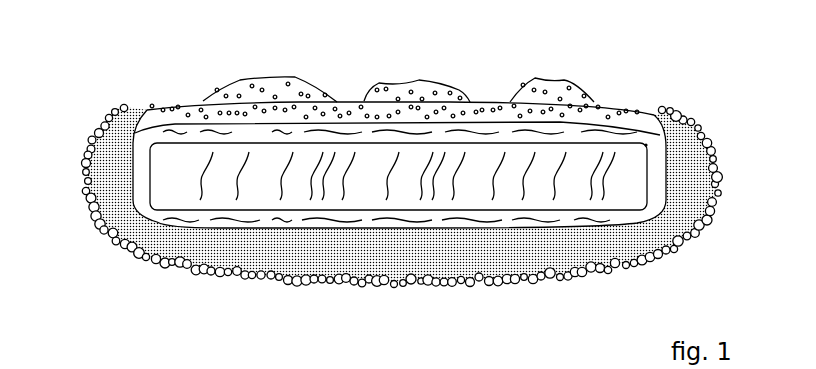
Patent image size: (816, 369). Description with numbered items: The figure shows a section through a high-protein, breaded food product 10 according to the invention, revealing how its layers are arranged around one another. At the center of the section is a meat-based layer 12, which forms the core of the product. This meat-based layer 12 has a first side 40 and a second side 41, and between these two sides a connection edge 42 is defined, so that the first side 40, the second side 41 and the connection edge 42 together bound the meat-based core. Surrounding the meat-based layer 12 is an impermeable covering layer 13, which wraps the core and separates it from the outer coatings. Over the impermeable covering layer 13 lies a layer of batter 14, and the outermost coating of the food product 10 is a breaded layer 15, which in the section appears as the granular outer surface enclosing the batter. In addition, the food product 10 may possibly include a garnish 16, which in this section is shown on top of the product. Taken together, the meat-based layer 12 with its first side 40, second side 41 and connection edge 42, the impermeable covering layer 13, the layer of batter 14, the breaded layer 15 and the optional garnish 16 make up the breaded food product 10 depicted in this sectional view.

The food product 10 is at (88, 80).
The meat-based layer 12 is at (624, 177).
The impermeable covering layer 13 is at (691, 127).
The layer of batter 14 is at (474, 254).
The breaded layer 15 is at (655, 258).
The garnish 16 is at (310, 92).
The first side 40 is at (288, 236).
The second side 41 is at (501, 114).
The connection edge 42 is at (118, 182).